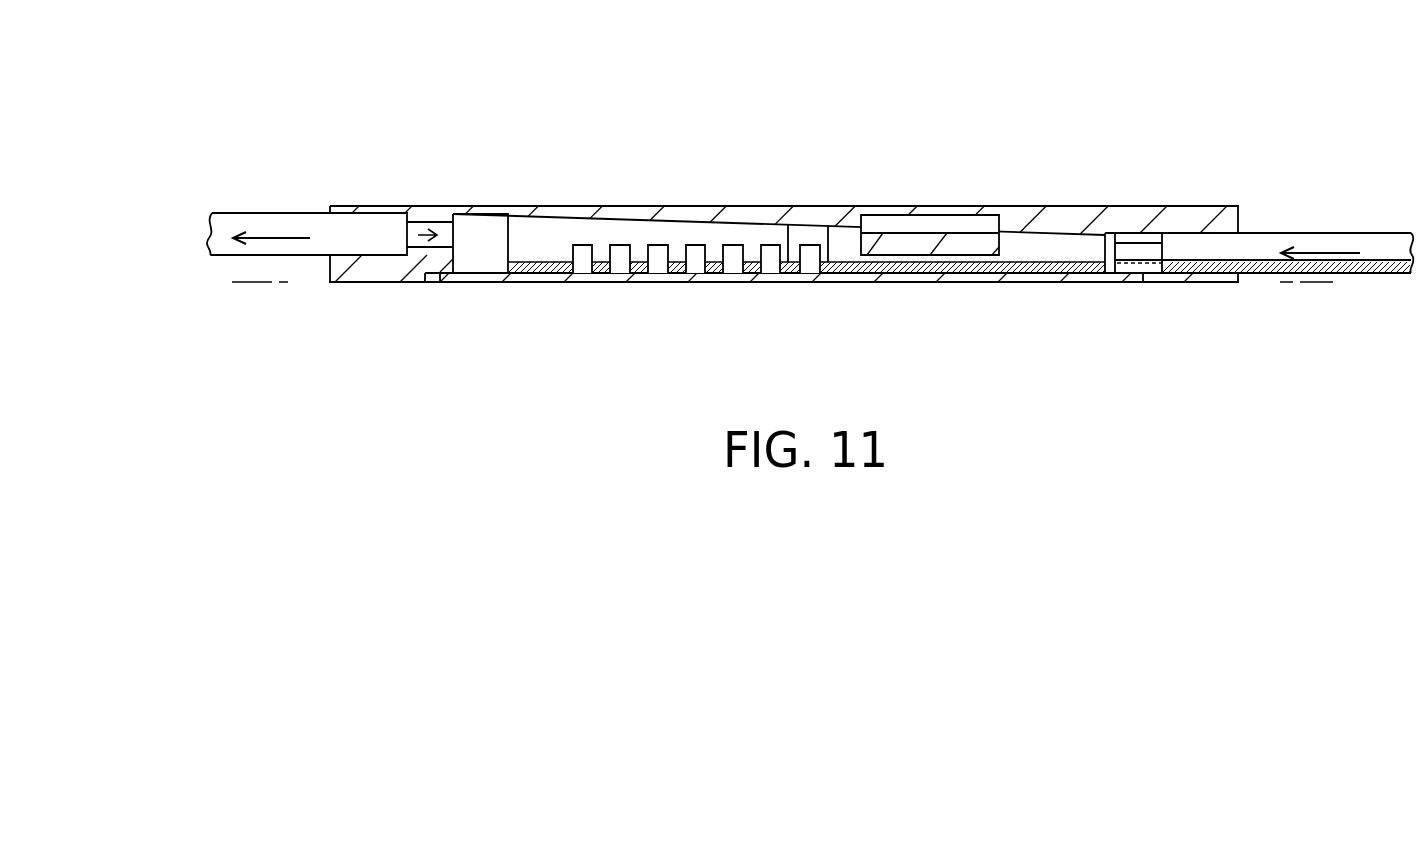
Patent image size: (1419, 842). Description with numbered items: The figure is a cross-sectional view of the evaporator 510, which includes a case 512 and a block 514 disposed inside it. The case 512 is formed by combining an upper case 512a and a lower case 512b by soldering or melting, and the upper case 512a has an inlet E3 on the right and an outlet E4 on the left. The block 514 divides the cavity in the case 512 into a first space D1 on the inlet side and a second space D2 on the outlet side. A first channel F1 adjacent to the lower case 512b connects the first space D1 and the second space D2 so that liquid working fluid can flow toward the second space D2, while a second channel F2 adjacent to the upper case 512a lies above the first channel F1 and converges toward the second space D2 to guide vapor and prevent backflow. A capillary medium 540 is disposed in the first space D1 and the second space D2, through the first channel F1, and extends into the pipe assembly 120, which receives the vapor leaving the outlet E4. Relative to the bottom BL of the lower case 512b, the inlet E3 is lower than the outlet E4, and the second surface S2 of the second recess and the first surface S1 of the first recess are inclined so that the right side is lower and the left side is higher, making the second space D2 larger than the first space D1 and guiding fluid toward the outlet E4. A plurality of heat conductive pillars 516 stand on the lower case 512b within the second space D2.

The case 512 is at (150, 21).
The upper case 512a is at (1133, 206).
The lower case 512b is at (957, 276).
The pipe assembly 120 is at (258, 212).
The heat conductive pillars 516 is at (770, 244).
The block 514 is at (962, 245).
The capillary medium 540 is at (1021, 274).
The evaporator 510 is at (1393, 383).
The outlet E4 is at (402, 216).
The inlet E3 is at (1208, 247).
The first space D1 is at (1058, 236).
The second space D2 is at (607, 222).
The first channel F1 is at (911, 269).
The second channel F2 is at (918, 212).
The first surface S1 is at (741, 235).
The second surface S2 is at (1091, 246).
The bottom BL is at (803, 295).